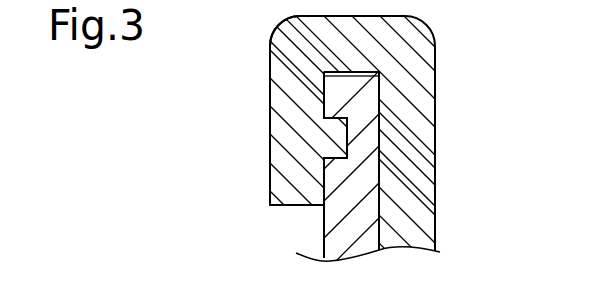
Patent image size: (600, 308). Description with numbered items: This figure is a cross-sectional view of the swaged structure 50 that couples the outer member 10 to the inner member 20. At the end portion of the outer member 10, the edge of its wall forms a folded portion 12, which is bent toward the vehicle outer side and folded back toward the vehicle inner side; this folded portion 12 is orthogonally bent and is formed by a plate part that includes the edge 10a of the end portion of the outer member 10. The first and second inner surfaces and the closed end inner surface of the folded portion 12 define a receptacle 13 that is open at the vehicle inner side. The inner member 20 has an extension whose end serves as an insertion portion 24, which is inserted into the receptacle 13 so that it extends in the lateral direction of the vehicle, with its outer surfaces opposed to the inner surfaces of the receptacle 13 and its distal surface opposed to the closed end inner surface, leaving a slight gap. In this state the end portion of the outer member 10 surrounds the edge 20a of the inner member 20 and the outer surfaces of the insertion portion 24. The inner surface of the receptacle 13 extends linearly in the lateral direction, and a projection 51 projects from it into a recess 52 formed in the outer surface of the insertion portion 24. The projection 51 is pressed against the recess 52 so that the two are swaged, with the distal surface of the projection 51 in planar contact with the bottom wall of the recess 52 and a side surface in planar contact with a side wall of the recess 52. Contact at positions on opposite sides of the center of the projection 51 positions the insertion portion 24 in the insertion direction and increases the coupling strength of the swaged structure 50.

The outer member 10 is at (442, 186).
The edge 10a is at (294, 206).
The folded portion 12 is at (291, 38).
The receptacle 13 is at (327, 178).
The inner member 20 is at (312, 230).
The edge 20a is at (353, 70).
The insertion portion 24 is at (368, 128).
The swaged structure 50 is at (292, 180).
The projection 51 is at (336, 130).
The recess 52 is at (332, 151).